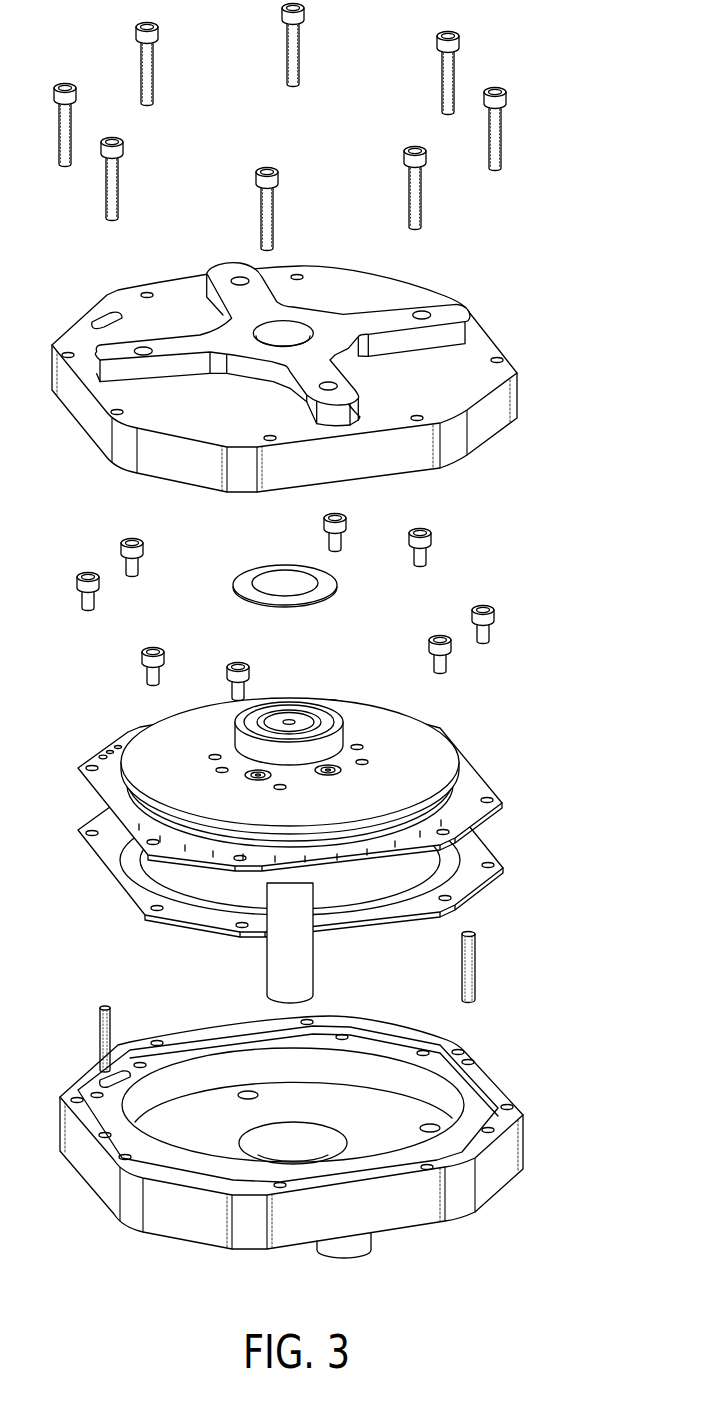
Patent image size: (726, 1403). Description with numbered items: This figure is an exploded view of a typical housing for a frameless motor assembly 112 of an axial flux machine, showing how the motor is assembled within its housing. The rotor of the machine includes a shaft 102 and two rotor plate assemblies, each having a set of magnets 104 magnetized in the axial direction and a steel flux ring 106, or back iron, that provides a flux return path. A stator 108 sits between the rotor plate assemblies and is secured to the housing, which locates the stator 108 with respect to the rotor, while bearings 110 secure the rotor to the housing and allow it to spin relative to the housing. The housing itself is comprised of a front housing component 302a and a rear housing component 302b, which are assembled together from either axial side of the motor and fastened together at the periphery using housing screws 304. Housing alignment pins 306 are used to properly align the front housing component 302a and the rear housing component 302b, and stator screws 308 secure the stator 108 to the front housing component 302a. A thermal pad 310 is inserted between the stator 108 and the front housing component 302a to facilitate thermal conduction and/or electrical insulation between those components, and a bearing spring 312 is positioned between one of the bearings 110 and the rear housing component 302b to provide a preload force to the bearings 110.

The shaft 102 is at (315, 955).
The magnets 104 is at (150, 812).
The steel flux ring 106 is at (385, 742).
The stator 108 is at (467, 787).
The bearings 110 is at (340, 698).
The frameless motor assembly 112 is at (502, 812).
The front housing component 302a is at (527, 1148).
The rear housing component 302b is at (517, 392).
The housing screws 304 is at (502, 133).
The housing alignment pins 306 is at (475, 962).
The stator screws 308 is at (448, 668).
The thermal pad 310 is at (480, 887).
The bearing spring 312 is at (337, 587).